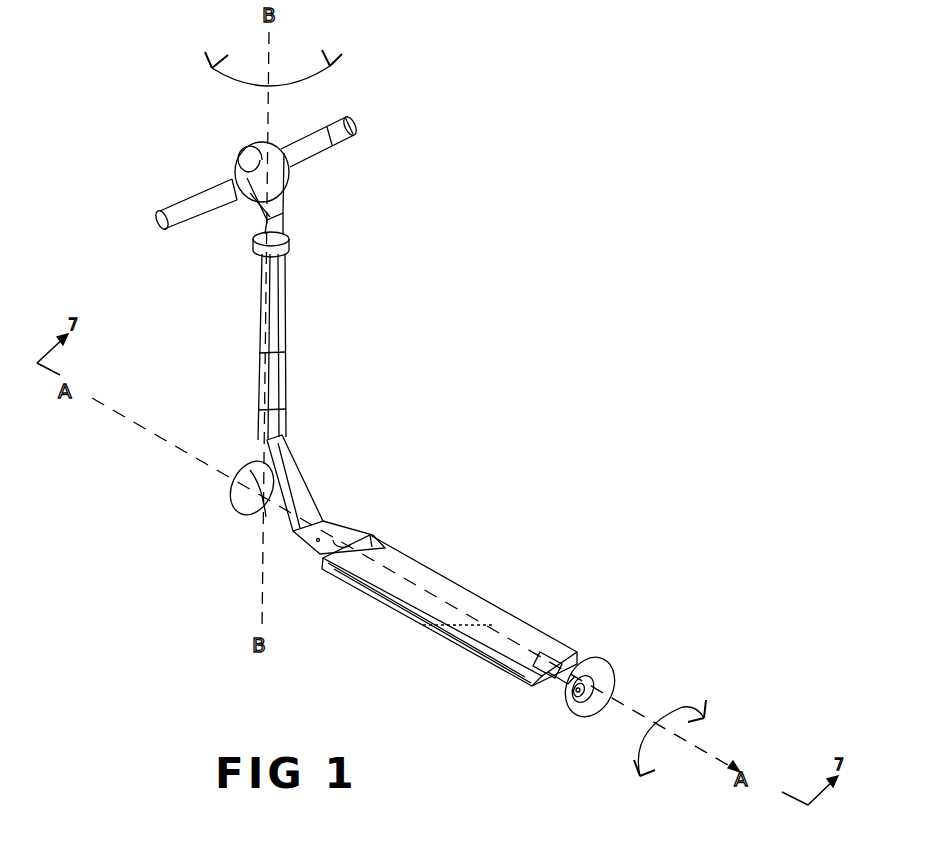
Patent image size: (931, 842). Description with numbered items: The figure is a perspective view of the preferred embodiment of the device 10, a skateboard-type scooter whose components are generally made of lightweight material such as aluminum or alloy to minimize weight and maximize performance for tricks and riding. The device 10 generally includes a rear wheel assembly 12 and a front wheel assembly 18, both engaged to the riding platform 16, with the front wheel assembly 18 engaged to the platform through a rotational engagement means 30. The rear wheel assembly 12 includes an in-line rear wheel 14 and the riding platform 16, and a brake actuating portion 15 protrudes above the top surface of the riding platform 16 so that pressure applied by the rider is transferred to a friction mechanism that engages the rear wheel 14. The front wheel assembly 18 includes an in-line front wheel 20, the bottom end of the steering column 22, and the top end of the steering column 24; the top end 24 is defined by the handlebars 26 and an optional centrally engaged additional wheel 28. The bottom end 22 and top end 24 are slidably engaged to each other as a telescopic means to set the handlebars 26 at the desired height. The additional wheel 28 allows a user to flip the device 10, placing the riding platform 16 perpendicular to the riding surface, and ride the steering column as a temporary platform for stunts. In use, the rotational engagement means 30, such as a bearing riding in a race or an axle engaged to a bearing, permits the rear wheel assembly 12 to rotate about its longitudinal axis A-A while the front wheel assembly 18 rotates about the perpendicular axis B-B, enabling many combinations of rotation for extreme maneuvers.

The device 10 is at (155, 129).
The rear wheel assembly 12 is at (535, 566).
The rear wheel 14 is at (598, 672).
The brake actuating portion 15 is at (536, 663).
The riding platform 16 is at (437, 592).
The front wheel assembly 18 is at (352, 297).
The front wheel 20 is at (236, 486).
The bottom end of the steering column 22 is at (260, 343).
The top end of the steering column 24 is at (289, 207).
The handlebars 26 is at (188, 196).
The additional wheel 28 is at (240, 150).
The rotational engagement means 30 is at (335, 508).